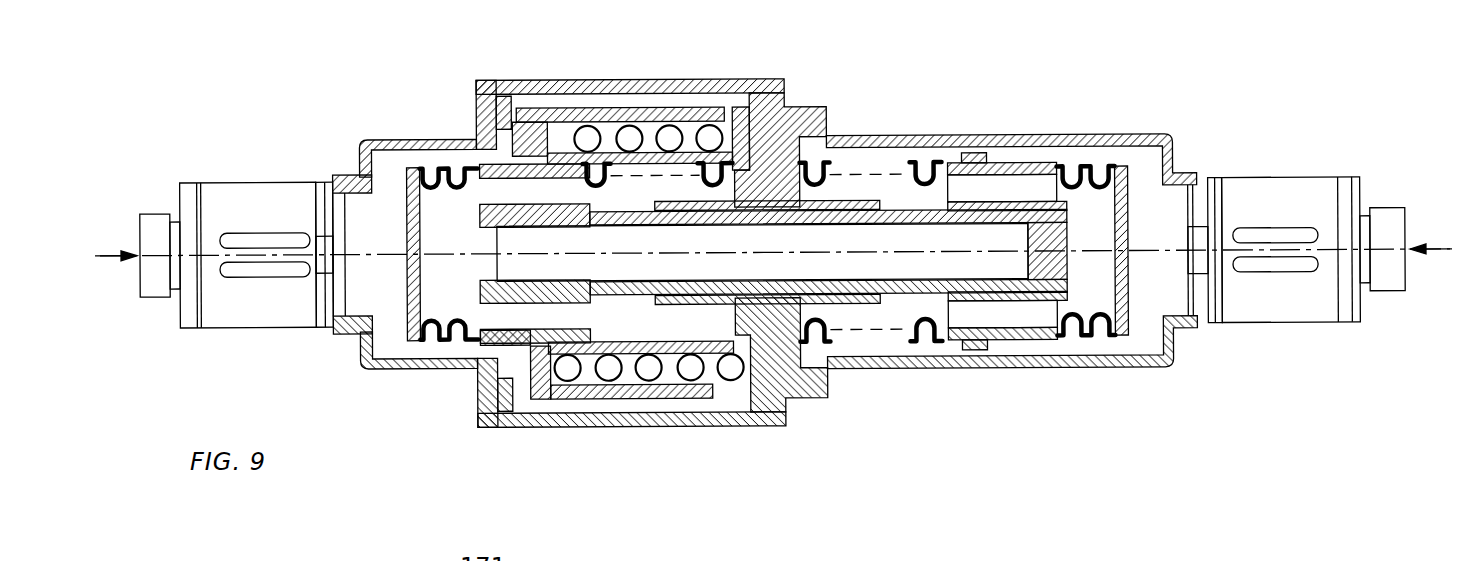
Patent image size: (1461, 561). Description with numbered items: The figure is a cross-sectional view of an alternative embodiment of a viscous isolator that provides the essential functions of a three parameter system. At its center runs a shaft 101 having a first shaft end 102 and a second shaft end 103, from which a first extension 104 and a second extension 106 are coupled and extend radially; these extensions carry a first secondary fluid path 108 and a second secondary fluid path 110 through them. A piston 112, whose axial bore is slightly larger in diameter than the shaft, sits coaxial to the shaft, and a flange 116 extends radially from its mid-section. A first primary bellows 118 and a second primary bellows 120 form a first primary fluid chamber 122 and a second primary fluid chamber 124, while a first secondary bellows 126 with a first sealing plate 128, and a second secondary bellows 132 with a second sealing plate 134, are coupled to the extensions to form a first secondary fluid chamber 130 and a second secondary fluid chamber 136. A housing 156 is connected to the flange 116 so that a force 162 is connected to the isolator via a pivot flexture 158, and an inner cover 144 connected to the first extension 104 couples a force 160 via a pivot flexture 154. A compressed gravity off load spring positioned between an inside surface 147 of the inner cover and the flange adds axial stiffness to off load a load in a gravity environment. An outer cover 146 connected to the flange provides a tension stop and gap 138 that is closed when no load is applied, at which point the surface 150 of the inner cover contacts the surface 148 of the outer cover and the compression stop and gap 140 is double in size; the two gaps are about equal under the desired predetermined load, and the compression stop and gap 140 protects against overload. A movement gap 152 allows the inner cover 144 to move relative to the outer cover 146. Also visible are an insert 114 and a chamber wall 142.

The shaft 101 is at (895, 225).
The first shaft end 102 is at (488, 252).
The second shaft end 103 is at (1065, 166).
The first extension 104 is at (462, 345).
The second extension 106 is at (1033, 340).
The first secondary fluid path 108 is at (540, 318).
The second secondary fluid path 110 is at (978, 313).
The piston 112 is at (842, 300).
The tube insert 114 is at (655, 300).
The flange 116 is at (785, 95).
The first primary bellows 118 is at (738, 168).
The second primary bellows 120 is at (835, 172).
The first primary fluid chamber 122 is at (612, 310).
The second primary fluid chamber 124 is at (847, 318).
The first secondary bellows 126 is at (372, 333).
The first sealing plate 128 is at (380, 298).
The first secondary fluid chamber 130 is at (378, 269).
The second secondary bellows 132 is at (1087, 338).
The second sealing plate 134 is at (1185, 178).
The second secondary fluid chamber 136 is at (1093, 215).
The tension stop and gap 138 is at (490, 424).
The compression stop and gap 140 is at (723, 393).
The spring chamber wall 142 is at (700, 115).
The inner cover 144 is at (445, 136).
The outer cover 146 is at (670, 78).
The inside surface of inner cover 147 is at (618, 120).
The surface of outer cover 148 is at (493, 125).
The surface of inner cover 150 is at (510, 110).
The movement gap 152 is at (467, 388).
The pivot flexture 154 is at (263, 180).
The housing 156 is at (947, 367).
The pivot flexture 158 is at (1262, 325).
The force 160 is at (100, 250).
The force 162 is at (1448, 248).